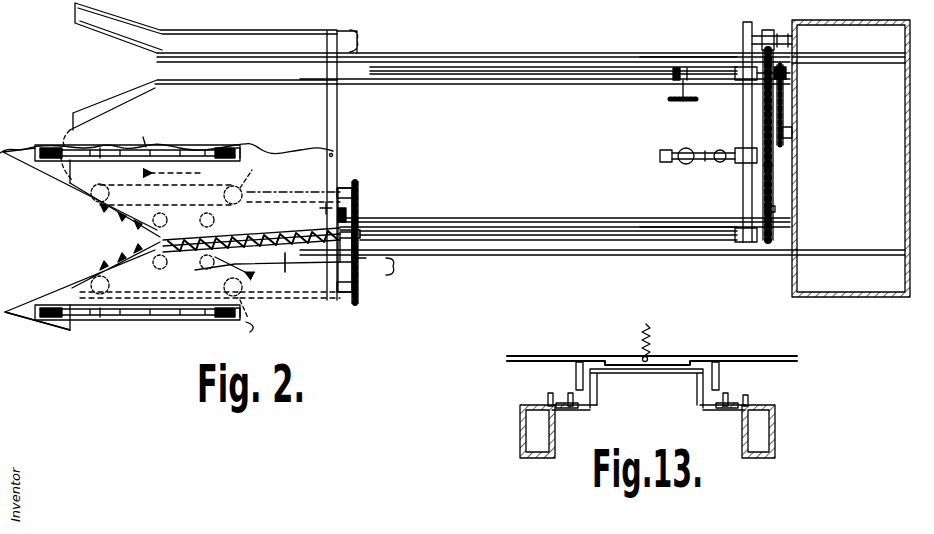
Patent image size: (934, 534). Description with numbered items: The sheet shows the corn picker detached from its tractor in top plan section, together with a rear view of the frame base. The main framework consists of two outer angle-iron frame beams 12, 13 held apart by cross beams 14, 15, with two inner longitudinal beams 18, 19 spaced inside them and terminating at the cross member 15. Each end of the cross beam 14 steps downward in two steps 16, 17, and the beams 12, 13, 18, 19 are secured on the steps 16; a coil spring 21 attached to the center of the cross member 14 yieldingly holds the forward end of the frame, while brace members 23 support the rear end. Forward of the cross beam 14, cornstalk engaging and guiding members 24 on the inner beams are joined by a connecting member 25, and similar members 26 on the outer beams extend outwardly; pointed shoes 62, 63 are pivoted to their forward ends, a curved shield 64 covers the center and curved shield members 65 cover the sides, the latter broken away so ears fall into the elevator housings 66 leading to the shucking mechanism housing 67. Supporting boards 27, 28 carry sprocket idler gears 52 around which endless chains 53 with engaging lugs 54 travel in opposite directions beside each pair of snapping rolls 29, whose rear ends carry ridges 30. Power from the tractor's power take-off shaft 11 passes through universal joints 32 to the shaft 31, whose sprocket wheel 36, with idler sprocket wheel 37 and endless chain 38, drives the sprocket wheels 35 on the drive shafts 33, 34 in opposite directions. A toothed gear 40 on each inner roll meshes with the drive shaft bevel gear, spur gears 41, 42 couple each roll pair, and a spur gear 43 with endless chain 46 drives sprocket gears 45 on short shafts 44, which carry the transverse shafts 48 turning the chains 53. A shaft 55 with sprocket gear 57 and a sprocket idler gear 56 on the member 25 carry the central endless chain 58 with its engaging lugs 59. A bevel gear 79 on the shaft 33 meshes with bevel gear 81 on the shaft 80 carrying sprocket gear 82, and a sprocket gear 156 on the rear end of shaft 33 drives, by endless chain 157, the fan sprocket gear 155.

In FIG. 2, the power take-off shaft 11 is at (664, 149).
In FIG. 2, the outer frame beam 12 is at (430, 53).
In FIG. 13, the outer frame beam 12 is at (749, 399).
In FIG. 2, the outer frame beam 13 is at (471, 251).
In FIG. 13, the outer frame beam 13 is at (548, 399).
In FIG. 2, the cross beam 14 is at (335, 117).
In FIG. 13, the cross beam 14 is at (681, 358).
In FIG. 2, the cross beam 15 is at (745, 195).
In FIG. 13, the step 16 is at (574, 408).
In FIG. 13, the step 17 is at (534, 458).
In FIG. 2, the inner longitudinal beam 18 is at (524, 86).
In FIG. 13, the inner longitudinal beam 18 is at (727, 395).
In FIG. 2, the inner longitudinal beam 19 is at (528, 218).
In FIG. 13, the inner longitudinal beam 19 is at (570, 392).
In FIG. 13, the coil spring 21 is at (642, 338).
In FIG. 2, the brace member 23 is at (652, 62).
In FIG. 2, the cornstalk engaging and guiding member 24 is at (94, 106).
In FIG. 2, the connecting member 25 is at (66, 131).
In FIG. 2, the cornstalk engaging and guiding member 26 is at (70, 8).
In FIG. 2, the supporting board 27 is at (273, 198).
In FIG. 2, the supporting board 28 is at (274, 298).
In FIG. 2, the snapping roll 29 is at (265, 232).
In FIG. 2, the ridge 30 is at (318, 228).
In FIG. 2, the shaft 31 is at (776, 145).
In FIG. 2, the universal joint 32 is at (696, 144).
In FIG. 2, the drive shaft 33 is at (560, 66).
In FIG. 2, the drive shaft 34 is at (568, 243).
In FIG. 2, the sprocket wheel 35 is at (756, 80).
In FIG. 2, the sprocket wheel 36 is at (780, 163).
In FIG. 2, the idler sprocket wheel 37 is at (774, 30).
In FIG. 2, the endless chain 38 is at (770, 209).
In FIG. 2, the toothed gear 40 is at (344, 240).
In FIG. 2, the spur gear 41 is at (320, 207).
In FIG. 2, the spur gear 42 is at (346, 248).
In FIG. 2, the spur gear 43 is at (360, 220).
In FIG. 2, the short shaft 44 is at (346, 190).
In FIG. 2, the sprocket gear 45 is at (359, 189).
In FIG. 2, the endless chain 46 is at (369, 258).
In FIG. 2, the transverse shaft 48 is at (254, 236).
In FIG. 2, the sprocket idler gear 52 is at (130, 228).
In FIG. 2, the endless chain 53 is at (161, 231).
In FIG. 2, the engaging lug 54 is at (100, 208).
In FIG. 2, the shaft 55 is at (224, 146).
In FIG. 2, the sprocket idler gear 56 is at (42, 147).
In FIG. 2, the sprocket gear 57 is at (245, 150).
In FIG. 2, the endless chain 58 is at (178, 150).
In FIG. 2, the engaging lug 59 is at (125, 145).
In FIG. 2, the pointed shoe 62 is at (40, 176).
In FIG. 2, the pointed shoe 63 is at (48, 296).
In FIG. 2, the curved shield 64 is at (303, 152).
In FIG. 2, the curved shield member 65 is at (248, 334).
In FIG. 2, the elevator housing 66 is at (360, 45).
In FIG. 2, the shucking mechanism housing 67 is at (910, 102).
In FIG. 2, the bevel gear 79 is at (677, 66).
In FIG. 2, the shaft 80 is at (669, 99).
In FIG. 2, the bevel gear 81 is at (690, 66).
In FIG. 2, the sprocket gear 82 is at (685, 102).
In FIG. 2, the sprocket gear 155 is at (782, 131).
In FIG. 2, the sprocket gear 156 is at (790, 72).
In FIG. 2, the endless chain 157 is at (790, 110).